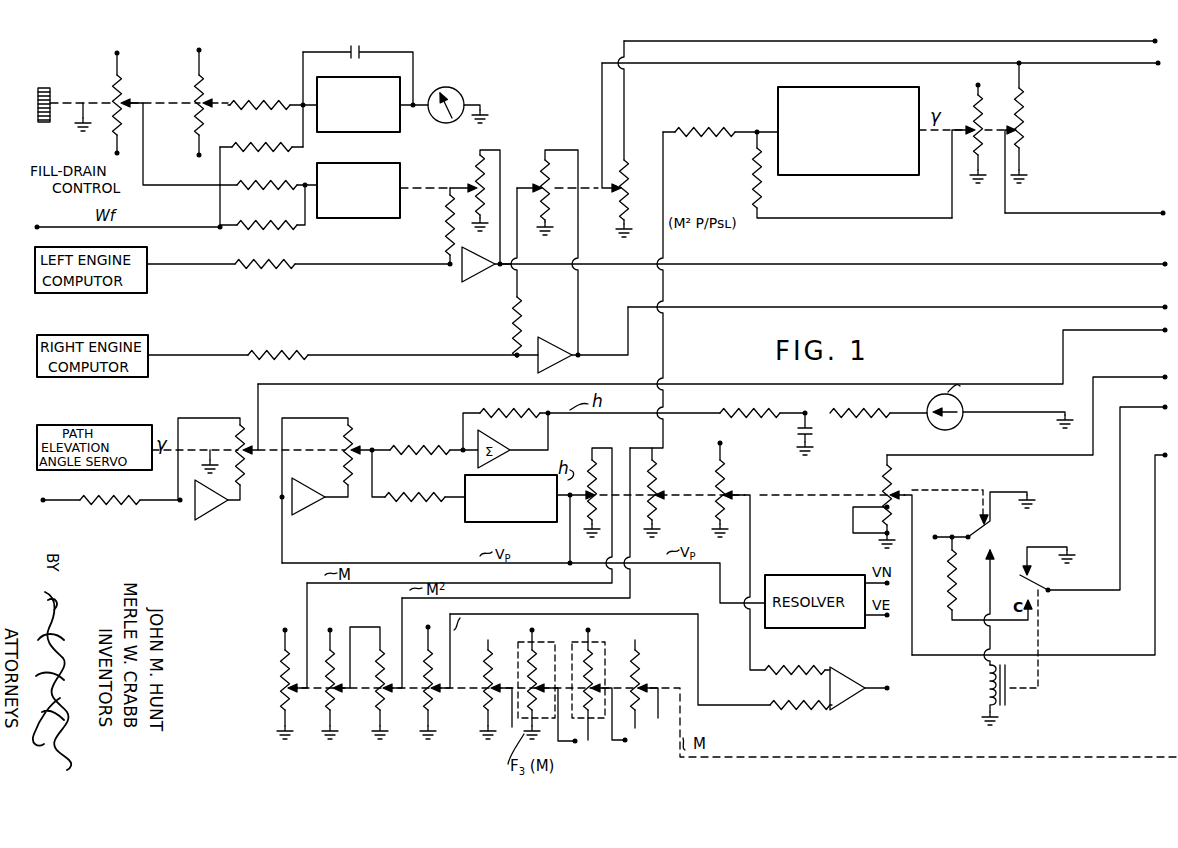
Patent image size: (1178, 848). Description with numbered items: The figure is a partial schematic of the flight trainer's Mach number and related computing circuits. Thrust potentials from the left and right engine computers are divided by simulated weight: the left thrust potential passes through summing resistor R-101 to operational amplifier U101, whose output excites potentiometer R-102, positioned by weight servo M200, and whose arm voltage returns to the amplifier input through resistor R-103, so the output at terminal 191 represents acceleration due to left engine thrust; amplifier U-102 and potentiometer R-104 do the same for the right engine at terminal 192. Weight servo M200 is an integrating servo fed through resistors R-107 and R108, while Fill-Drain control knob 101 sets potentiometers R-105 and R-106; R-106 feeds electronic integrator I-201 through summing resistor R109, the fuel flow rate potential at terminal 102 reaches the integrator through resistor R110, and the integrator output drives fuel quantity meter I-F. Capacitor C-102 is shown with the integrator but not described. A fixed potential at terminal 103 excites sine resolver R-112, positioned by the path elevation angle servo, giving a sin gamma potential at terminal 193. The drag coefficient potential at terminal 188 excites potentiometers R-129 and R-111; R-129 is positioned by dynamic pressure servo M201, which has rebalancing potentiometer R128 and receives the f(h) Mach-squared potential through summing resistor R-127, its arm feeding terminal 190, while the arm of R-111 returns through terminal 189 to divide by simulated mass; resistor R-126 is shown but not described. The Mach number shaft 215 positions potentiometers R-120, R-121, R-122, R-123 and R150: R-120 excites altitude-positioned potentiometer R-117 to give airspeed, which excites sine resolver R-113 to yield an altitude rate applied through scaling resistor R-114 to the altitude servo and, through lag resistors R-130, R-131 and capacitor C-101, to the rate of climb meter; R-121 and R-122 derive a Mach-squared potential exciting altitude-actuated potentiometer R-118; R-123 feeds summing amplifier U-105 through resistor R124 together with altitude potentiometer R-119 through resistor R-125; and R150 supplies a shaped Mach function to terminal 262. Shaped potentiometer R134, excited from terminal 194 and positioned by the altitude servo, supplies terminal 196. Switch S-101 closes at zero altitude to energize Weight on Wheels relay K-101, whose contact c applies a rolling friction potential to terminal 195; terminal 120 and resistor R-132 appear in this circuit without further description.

The Fill-Drain control knob 101 is at (58, 67).
The fuel flow rate terminal 102 is at (40, 210).
The fixed potential terminal 103 is at (34, 510).
The fill-drain potentiometer R-105 is at (162, 74).
The fill-drain potentiometer R-106 is at (202, 94).
The summing resistor R109 is at (298, 98).
The resistor R110 is at (284, 149).
The input resistor R-107 is at (288, 179).
The resistor R108 is at (288, 219).
The capacitor C-102 is at (384, 40).
The electronic integrator I-201 is at (335, 142).
The fuel quantity meter I-F is at (428, 116).
The weight servo M200 is at (358, 190).
The potentiometer R-102 is at (462, 180).
The feedback resistor R-103 is at (440, 258).
The potentiometer R-104 is at (531, 142).
The potentiometer R-111 is at (644, 220).
The summing resistor R-101 is at (242, 268).
The operational amplifier U101 is at (466, 288).
The amplifier U-102 is at (554, 370).
The summing resistor R-127 is at (736, 125).
The resistor R-126 is at (750, 178).
The dynamic pressure servo M201 is at (848, 131).
The rebalancing potentiometer R128 is at (981, 172).
The potentiometer R-129 is at (1026, 128).
The terminal 188 is at (1148, 37).
The terminal 189 is at (1148, 58).
The terminal 190 is at (1154, 200).
The terminal 191 is at (1152, 256).
The terminal 192 is at (1154, 296).
The terminal 193 is at (1154, 323).
The terminal 194 is at (1160, 373).
The terminal 195 is at (1162, 404).
The terminal 196 is at (1168, 452).
The sine resolver R-112 is at (253, 426).
The sine resolver R-113 is at (358, 404).
The scaling resistor R-114 is at (439, 500).
The potentiometer R-117 is at (578, 468).
The altitude-actuated potentiometer R-118 is at (666, 466).
The potentiometer R-119 is at (723, 488).
The lag circuit resistor R-130 is at (746, 396).
The lag circuit resistor R-131 is at (850, 396).
The lag circuit capacitor C-101 is at (812, 426).
The shaped potentiometer R134 is at (878, 476).
The positive supply terminal 120 is at (954, 514).
The switch S-101 is at (985, 538).
The resistor R-132 is at (954, 598).
The Weight on Wheels relay K-101 is at (990, 686).
The resistor R-125 is at (778, 654).
The resistor R124 is at (786, 708).
The summing amplifier U-105 is at (846, 672).
The Mach number servo output shaft 215 is at (918, 757).
The potentiometer R-120 is at (279, 652).
The potentiometer R-121 is at (369, 610).
The potentiometer R-122 is at (374, 704).
The potentiometer R-123 is at (440, 698).
The shaped potentiometer R150 is at (564, 637).
The terminal 262 is at (598, 730).